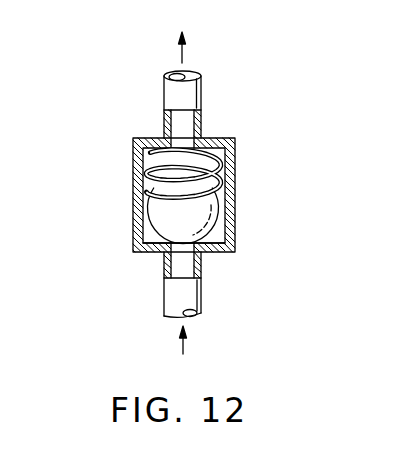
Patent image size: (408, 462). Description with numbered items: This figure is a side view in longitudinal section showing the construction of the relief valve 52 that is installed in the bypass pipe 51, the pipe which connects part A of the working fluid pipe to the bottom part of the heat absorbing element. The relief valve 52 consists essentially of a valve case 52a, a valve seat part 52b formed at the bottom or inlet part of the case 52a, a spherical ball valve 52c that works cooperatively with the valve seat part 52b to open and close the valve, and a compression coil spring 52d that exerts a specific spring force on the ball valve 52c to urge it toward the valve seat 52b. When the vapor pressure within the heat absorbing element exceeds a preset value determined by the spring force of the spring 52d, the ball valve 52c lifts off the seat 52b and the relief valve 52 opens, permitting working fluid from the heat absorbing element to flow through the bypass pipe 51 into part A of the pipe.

The bypass pipe 51 is at (164, 91).
The relief valve 52 is at (180, 215).
The valve case 52a is at (133, 201).
The valve seat part 52b is at (165, 262).
The ball valve 52c is at (218, 252).
The compression coil spring 52d is at (223, 150).